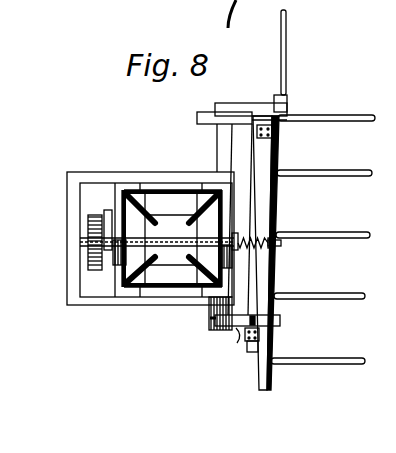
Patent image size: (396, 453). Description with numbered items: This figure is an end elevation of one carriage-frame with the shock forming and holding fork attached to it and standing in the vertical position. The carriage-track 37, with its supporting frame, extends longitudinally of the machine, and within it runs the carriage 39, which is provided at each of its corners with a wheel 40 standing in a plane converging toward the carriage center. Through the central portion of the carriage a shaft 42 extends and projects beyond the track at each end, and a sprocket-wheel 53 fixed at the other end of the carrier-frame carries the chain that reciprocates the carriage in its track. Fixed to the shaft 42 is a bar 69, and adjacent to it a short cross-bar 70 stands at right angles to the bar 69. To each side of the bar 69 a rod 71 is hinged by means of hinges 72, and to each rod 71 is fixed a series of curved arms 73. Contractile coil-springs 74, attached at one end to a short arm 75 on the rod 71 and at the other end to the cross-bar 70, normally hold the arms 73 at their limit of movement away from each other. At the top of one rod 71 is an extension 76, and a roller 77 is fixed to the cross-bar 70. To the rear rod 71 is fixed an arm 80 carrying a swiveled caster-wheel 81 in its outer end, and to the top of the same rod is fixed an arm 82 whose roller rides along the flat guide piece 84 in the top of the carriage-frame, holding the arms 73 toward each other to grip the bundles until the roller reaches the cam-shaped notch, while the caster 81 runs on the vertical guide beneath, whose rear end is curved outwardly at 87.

The carriage-track 37 is at (127, 188).
The carriage 39 is at (166, 203).
The wheel 40 is at (150, 238).
The shaft 42 is at (172, 238).
The sprocket-wheel 53 is at (88, 244).
The bar 69 is at (263, 158).
The cross-bar 70 is at (236, 236).
The rod 71 is at (279, 201).
The hinge 72 is at (257, 134).
The curved arm 73 is at (352, 358).
The contractile coil-spring 74 is at (278, 250).
The short arm 75 is at (282, 243).
The extension 76 is at (298, 61).
The roller 77 is at (208, 307).
The arm 80 is at (282, 320).
The caster-wheel 81 is at (238, 333).
The arm 82 is at (244, 101).
The flat piece 84 is at (197, 115).
The outwardly-curved portion 87 is at (210, 325).